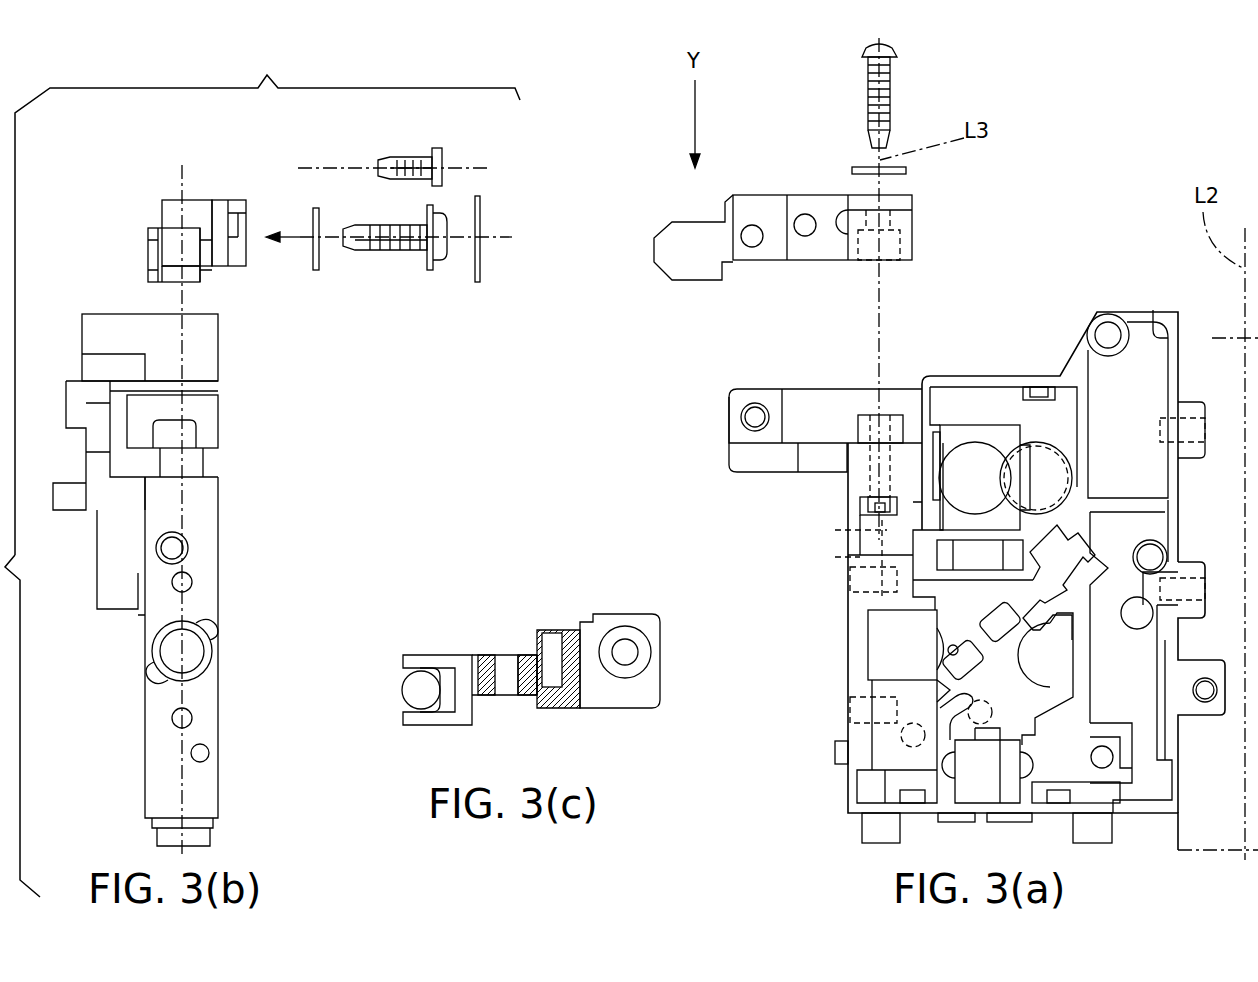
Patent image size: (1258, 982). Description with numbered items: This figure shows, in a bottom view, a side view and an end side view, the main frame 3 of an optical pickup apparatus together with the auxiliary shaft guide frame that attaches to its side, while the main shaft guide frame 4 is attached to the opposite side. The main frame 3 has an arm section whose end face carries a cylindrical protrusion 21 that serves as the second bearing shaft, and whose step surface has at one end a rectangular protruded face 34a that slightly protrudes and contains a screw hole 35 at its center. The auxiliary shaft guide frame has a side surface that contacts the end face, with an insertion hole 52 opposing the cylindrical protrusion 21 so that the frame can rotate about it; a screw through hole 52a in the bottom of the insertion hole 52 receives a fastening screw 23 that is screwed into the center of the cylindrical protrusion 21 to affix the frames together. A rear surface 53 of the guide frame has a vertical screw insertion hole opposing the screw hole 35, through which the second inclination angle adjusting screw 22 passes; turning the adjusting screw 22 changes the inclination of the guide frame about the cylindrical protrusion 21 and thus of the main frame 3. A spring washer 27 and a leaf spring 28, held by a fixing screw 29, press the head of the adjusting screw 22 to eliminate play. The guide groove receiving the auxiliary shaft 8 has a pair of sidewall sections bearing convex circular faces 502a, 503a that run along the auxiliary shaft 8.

The main frame 3 is at (1000, 364).
The main shaft guide frame 4 is at (1207, 330).
The auxiliary shaft 8 is at (388, 689).
The cylindrical protrusion 21 is at (888, 415).
The second inclination angle adjusting screw 22 is at (368, 250).
The fastening screw 23 is at (892, 98).
The spring washer 27 is at (320, 222).
The leaf spring 28 is at (480, 276).
The fixing screw 29 is at (410, 157).
The protruded face 34a is at (727, 420).
The screw hole 35 is at (755, 421).
The insertion hole 52 is at (890, 268).
The screw through hole 52a is at (870, 205).
The rear surface 53 is at (727, 214).
The convex circular face 502a is at (198, 252).
The convex circular face 503a is at (168, 262).